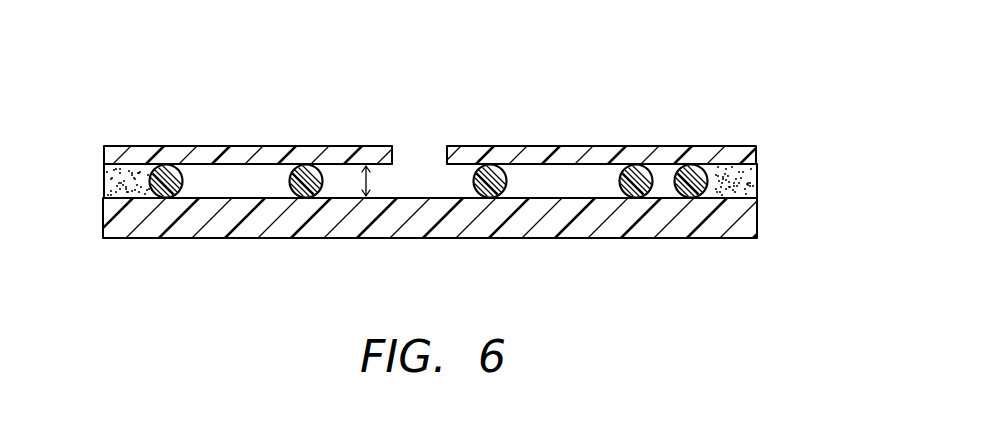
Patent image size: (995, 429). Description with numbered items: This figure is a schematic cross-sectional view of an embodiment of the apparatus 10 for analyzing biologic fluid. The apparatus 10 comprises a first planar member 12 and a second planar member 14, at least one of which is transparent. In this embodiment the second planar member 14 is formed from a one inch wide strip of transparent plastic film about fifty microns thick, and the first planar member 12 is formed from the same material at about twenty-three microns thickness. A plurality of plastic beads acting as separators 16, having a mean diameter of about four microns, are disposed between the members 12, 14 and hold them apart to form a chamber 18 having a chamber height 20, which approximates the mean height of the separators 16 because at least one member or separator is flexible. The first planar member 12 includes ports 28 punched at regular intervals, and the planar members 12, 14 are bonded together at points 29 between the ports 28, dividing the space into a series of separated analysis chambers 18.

The apparatus for analyzing biologic fluid 10 is at (425, 158).
The first planar member 12 is at (723, 163).
The second planar member 14 is at (575, 240).
The separators 16 is at (166, 197).
The chamber 18 is at (588, 176).
The chamber height 20 is at (368, 180).
The ports 28 is at (431, 149).
The bonded points 29 is at (103, 178).